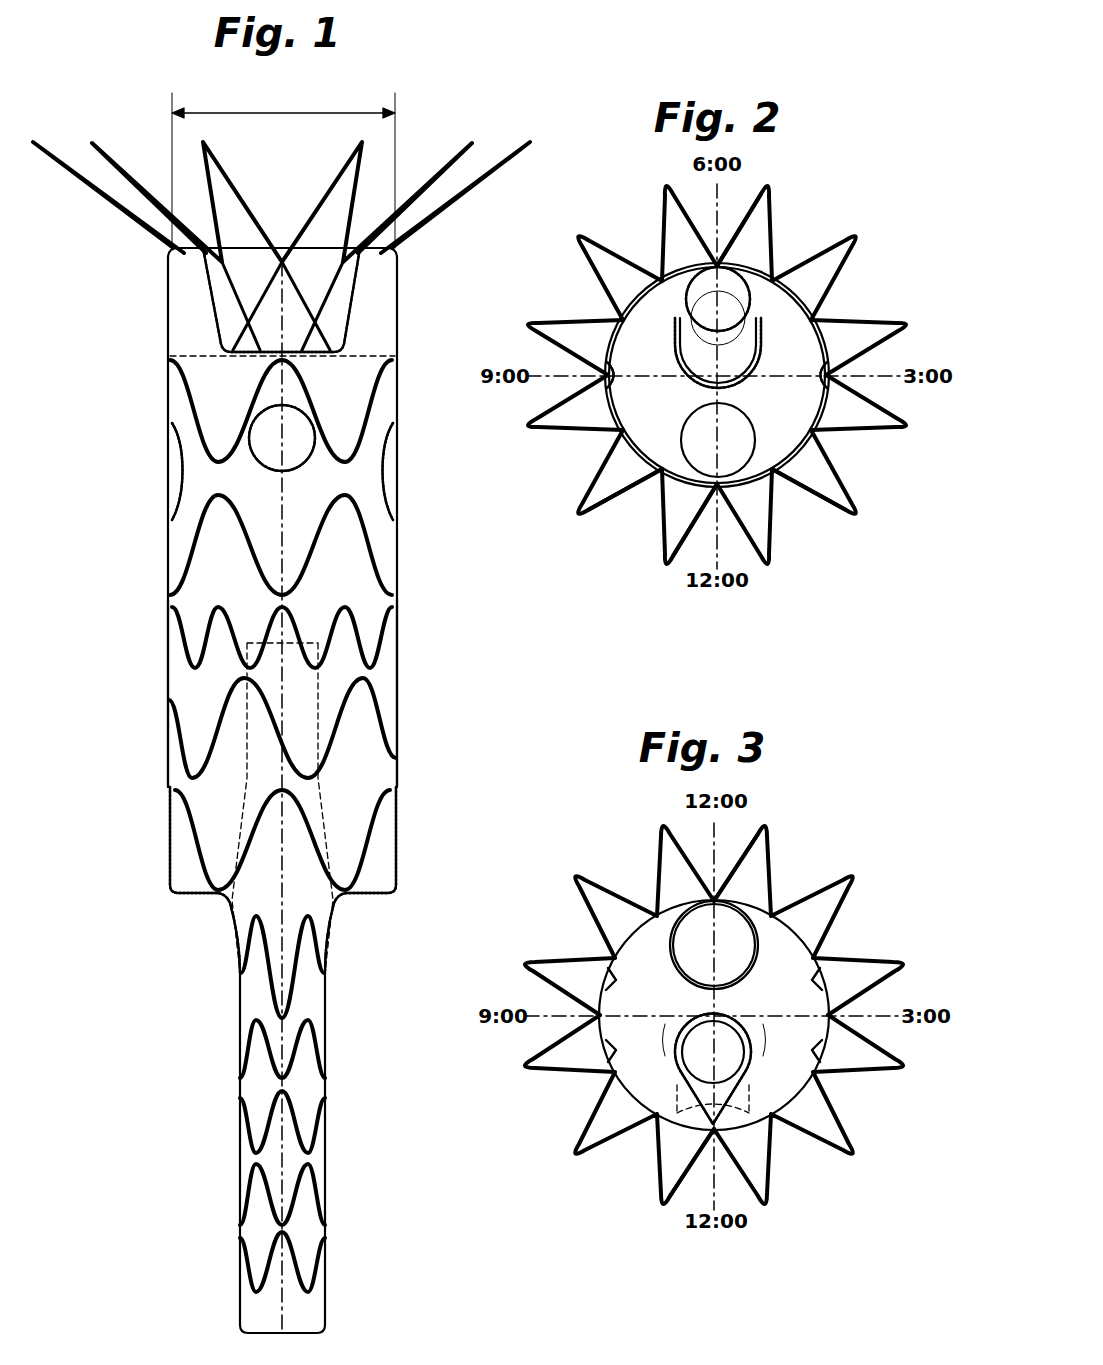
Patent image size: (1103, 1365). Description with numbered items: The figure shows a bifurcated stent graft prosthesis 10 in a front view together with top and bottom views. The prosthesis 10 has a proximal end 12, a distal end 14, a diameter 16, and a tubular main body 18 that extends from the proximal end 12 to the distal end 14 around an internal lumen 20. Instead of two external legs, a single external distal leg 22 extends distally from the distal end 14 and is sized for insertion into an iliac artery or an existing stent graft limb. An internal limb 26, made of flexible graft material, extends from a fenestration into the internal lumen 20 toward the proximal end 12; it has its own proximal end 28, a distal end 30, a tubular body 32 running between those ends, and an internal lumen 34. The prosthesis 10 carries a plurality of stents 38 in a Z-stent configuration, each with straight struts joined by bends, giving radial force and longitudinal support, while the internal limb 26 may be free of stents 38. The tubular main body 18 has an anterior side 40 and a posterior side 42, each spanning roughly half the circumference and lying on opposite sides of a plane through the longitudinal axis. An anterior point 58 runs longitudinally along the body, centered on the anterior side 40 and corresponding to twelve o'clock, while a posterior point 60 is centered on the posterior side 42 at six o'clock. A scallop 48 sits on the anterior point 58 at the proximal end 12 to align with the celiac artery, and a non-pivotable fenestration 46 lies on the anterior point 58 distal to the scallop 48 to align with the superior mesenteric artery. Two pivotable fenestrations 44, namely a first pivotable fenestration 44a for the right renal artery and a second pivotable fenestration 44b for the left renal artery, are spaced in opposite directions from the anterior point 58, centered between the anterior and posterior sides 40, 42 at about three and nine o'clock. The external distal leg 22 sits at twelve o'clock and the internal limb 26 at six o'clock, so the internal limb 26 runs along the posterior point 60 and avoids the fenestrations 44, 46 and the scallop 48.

In FIG. 1, the prosthesis 10 is at (126, 715).
In FIG. 1, the proximal end 12 is at (170, 250).
In FIG. 1, the distal end 14 is at (175, 893).
In FIG. 1, the diameter 16 is at (307, 115).
In FIG. 1, the tubular main body 18 is at (168, 665).
In FIG. 2, the internal lumen 20 is at (779, 410).
In FIG. 3, the internal lumen 20 is at (790, 947).
In FIG. 1, the external distal leg 22 is at (241, 1127).
In FIG. 1, the internal limb 26 is at (303, 700).
In FIG. 2, the internal limb 26 is at (734, 351).
In FIG. 3, the internal limb 26 is at (731, 1045).
In FIG. 2, the proximal end 28 is at (736, 290).
In FIG. 3, the distal end 30 is at (695, 1102).
In FIG. 2, the tubular body 32 is at (693, 304).
In FIG. 3, the internal lumen 34 is at (720, 1060).
In FIG. 1, the stents 38 is at (380, 562).
In FIG. 1, the anterior side 40 is at (342, 763).
In FIG. 2, the anterior side 40 is at (781, 483).
In FIG. 3, the anterior side 40 is at (652, 902).
In FIG. 2, the posterior side 42 is at (652, 263).
In FIG. 3, the posterior side 42 is at (819, 1077).
In FIG. 2, the pivotable fenestrations 44 is at (622, 397).
In FIG. 1, the first pivotable fenestration 44a is at (175, 458).
In FIG. 1, the second pivotable fenestration 44b is at (388, 470).
In FIG. 1, the non-pivotable fenestration 46 is at (250, 407).
In FIG. 1, the scallop 48 is at (357, 310).
In FIG. 1, the anterior point 58 is at (282, 508).
In FIG. 2, the anterior point 58 is at (718, 501).
In FIG. 3, the anterior point 58 is at (720, 878).
In FIG. 2, the posterior point 60 is at (724, 245).
In FIG. 3, the posterior point 60 is at (720, 1152).